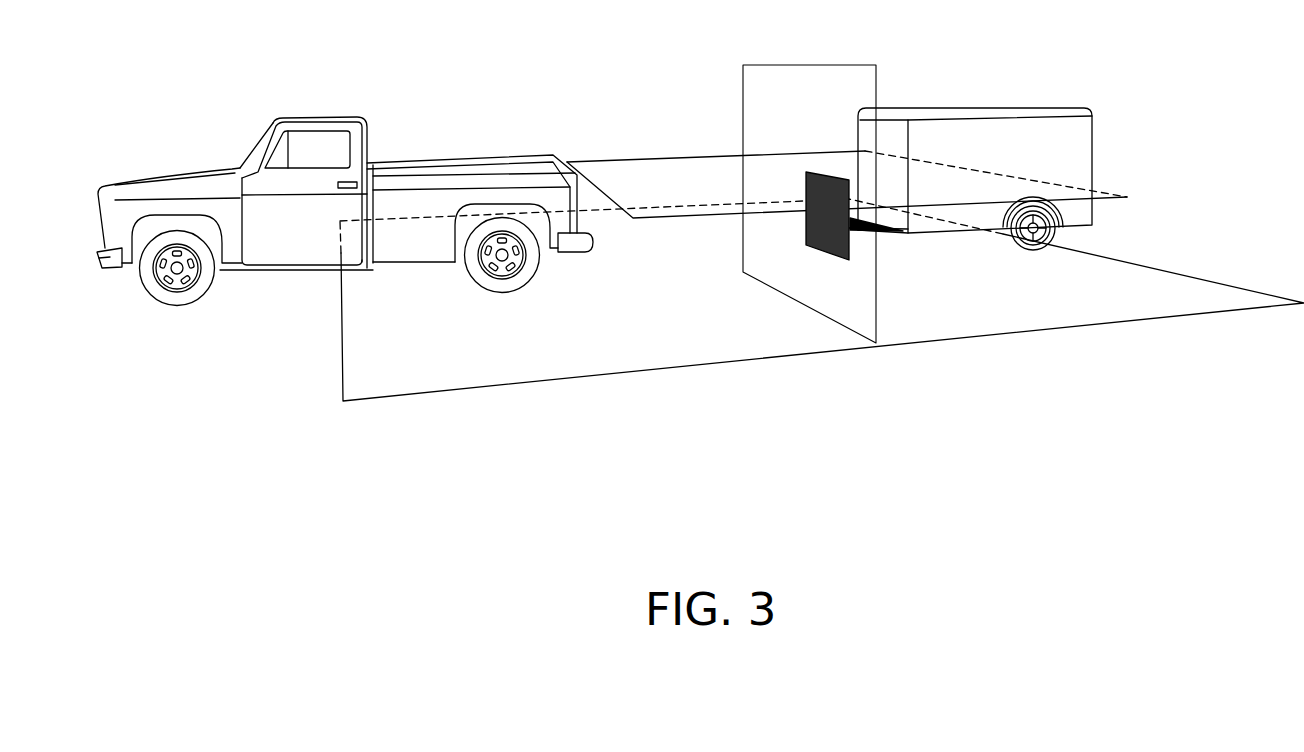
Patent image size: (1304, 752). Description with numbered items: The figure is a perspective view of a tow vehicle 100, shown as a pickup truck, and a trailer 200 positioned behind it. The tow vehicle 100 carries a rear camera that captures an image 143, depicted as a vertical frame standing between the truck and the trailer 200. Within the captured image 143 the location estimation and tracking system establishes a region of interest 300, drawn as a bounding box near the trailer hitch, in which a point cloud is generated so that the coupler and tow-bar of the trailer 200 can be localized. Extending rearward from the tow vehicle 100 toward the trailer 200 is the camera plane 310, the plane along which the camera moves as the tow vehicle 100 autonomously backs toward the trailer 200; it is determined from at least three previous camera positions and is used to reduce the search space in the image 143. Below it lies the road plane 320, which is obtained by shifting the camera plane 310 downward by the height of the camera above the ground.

The tow vehicle 100 is at (323, 117).
The trailer 200 is at (989, 108).
The image 143 is at (878, 291).
The region of interest 300 is at (822, 250).
The camera plane 310 is at (616, 161).
The road plane 320 is at (342, 388).